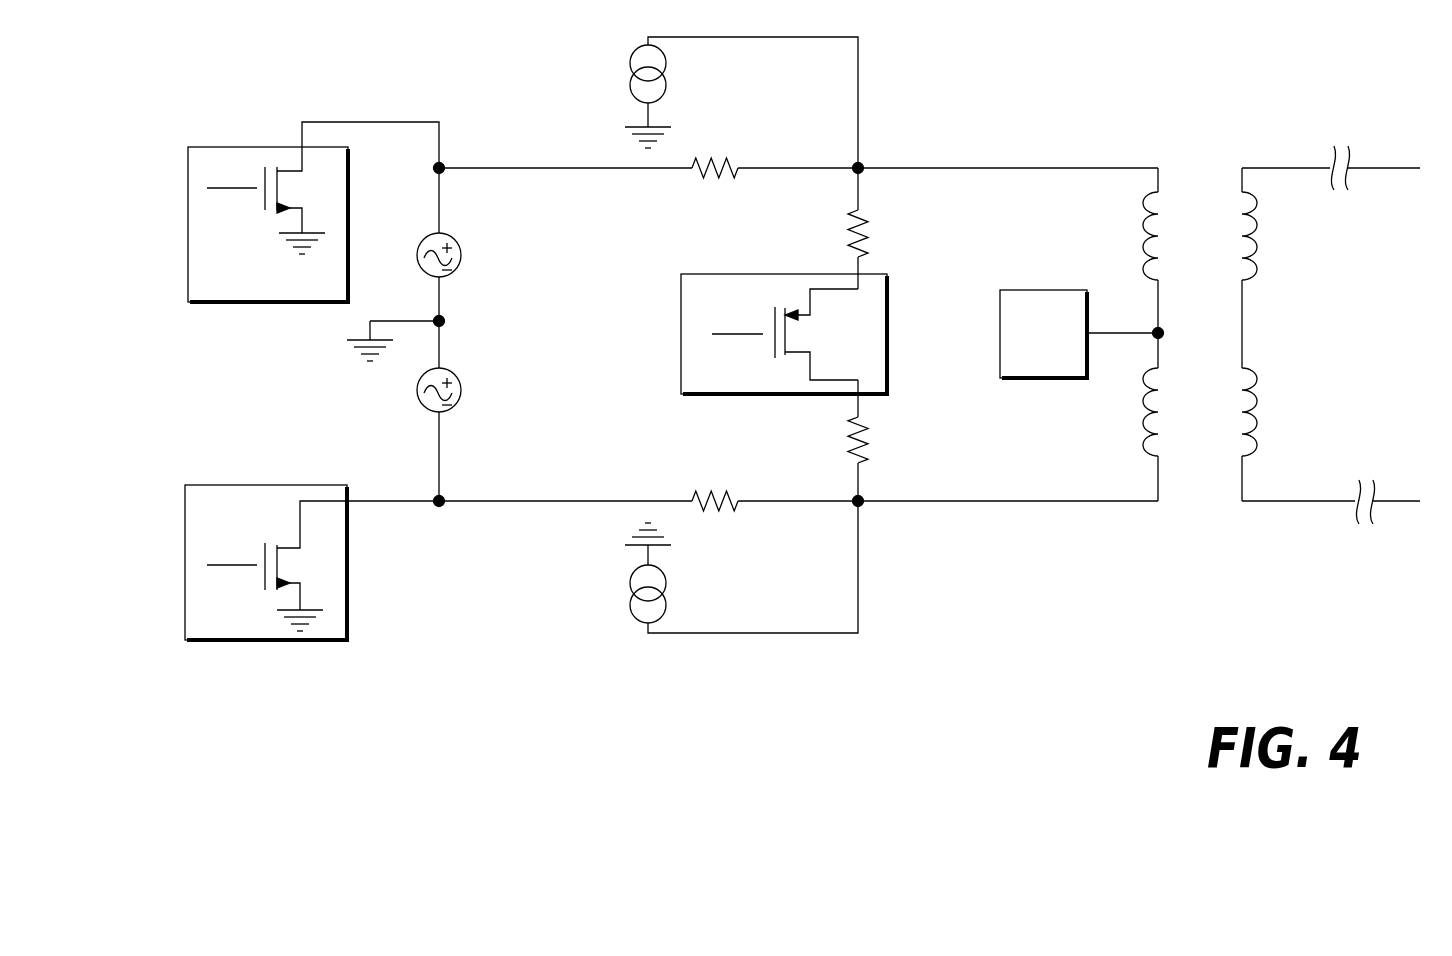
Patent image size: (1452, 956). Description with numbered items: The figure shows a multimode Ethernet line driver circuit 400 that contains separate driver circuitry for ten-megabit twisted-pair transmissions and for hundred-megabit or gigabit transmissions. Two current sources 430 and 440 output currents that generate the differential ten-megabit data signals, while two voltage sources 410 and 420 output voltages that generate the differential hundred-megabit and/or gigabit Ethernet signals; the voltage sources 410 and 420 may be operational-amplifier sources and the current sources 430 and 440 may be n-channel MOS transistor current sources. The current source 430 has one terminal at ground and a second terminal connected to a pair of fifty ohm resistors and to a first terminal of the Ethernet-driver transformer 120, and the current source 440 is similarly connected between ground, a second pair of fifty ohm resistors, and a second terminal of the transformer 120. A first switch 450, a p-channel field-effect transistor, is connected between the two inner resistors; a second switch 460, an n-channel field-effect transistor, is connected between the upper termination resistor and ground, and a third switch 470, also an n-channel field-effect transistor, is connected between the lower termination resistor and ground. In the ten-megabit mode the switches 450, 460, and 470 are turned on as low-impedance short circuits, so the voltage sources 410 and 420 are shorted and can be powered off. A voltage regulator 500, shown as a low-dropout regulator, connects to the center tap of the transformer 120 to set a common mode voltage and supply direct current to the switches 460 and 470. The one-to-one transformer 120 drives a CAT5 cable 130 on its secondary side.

The multimode Ethernet line driver circuit 400 is at (497, 663).
The voltage source 410 is at (468, 257).
The voltage source 420 is at (468, 420).
The current source 430 is at (620, 75).
The current source 440 is at (620, 598).
The first switch 450 is at (790, 402).
The second switch 460 is at (158, 203).
The third switch 470 is at (165, 532).
The voltage regulator 500 is at (1079, 335).
The Ethernet-driver transformer 120 is at (1205, 477).
The CAT5 cable 130 is at (1344, 335).